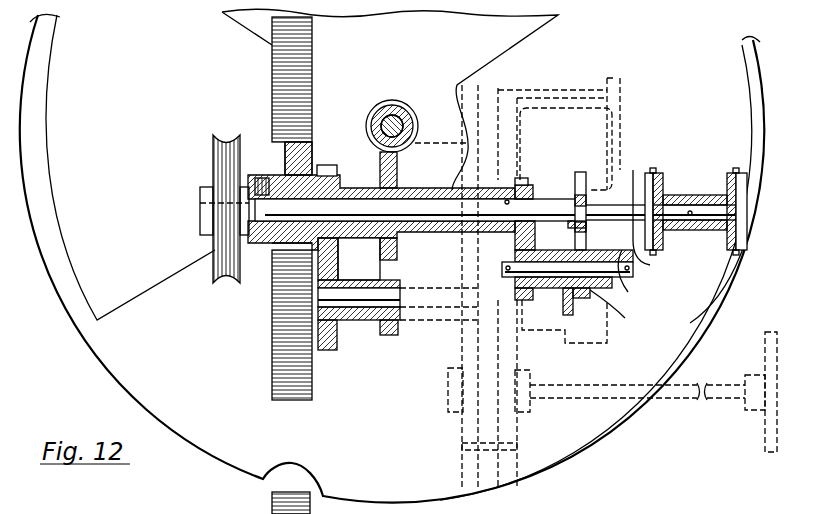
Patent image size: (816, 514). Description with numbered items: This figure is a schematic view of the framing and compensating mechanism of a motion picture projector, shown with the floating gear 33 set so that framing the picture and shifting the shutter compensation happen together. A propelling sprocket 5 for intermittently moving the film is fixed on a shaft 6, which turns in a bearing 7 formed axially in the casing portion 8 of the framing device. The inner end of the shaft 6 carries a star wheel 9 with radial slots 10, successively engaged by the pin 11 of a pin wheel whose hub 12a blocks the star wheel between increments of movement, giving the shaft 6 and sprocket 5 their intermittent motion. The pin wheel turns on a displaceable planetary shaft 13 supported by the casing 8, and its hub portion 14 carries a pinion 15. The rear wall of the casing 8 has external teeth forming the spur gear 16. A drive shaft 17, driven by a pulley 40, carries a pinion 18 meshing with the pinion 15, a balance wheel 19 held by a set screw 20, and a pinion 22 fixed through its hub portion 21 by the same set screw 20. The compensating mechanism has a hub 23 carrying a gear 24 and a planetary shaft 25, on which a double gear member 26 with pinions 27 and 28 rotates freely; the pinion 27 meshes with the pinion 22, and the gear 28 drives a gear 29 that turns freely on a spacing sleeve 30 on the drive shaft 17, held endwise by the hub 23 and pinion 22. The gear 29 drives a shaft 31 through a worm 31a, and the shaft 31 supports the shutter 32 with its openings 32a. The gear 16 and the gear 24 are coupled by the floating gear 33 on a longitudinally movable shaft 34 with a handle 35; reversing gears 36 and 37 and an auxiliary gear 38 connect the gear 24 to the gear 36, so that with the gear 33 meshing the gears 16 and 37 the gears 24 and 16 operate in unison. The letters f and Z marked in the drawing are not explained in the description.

The propelling sprocket 5 is at (662, 183).
The shaft 6 is at (648, 262).
The bearing 7 is at (626, 176).
The casing portion 8 is at (616, 114).
The star wheel 9 is at (574, 197).
The radial slots 10 is at (580, 180).
The pin 11 is at (570, 222).
The hub 12a is at (610, 318).
The planetary shaft 13 is at (618, 288).
The hub portion 14 is at (532, 302).
The pinion 15 is at (513, 256).
The spur gear 16 is at (508, 88).
The drive shaft 17 is at (452, 230).
The pinion 18 is at (527, 178).
The balance wheel 19 is at (292, 400).
The set screw 20 is at (265, 176).
The hub portion 21 is at (262, 242).
The pinion 22 is at (342, 188).
The hub 23 is at (428, 300).
The gear 24 is at (478, 86).
The planetary shaft 25 is at (350, 320).
The double gear member 26 is at (362, 290).
The pinion 27 is at (326, 350).
The gear 28 is at (386, 336).
The gear 29 is at (412, 152).
The spacing sleeve 30 is at (415, 190).
The shaft 31 is at (376, 116).
The worm 31a is at (390, 104).
The shutter 32 is at (222, 332).
The openings 32a is at (40, 160).
The floating gear 33 is at (528, 370).
The longitudinally movable shaft 34 is at (640, 400).
The handle 35 is at (765, 440).
The reversing gear 36 is at (462, 472).
The reversing gear 37 is at (510, 480).
The auxiliary gear 38 is at (447, 403).
The pulley 40 is at (213, 262).
The bolt f is at (404, 104).
The axis Z is at (414, 118).